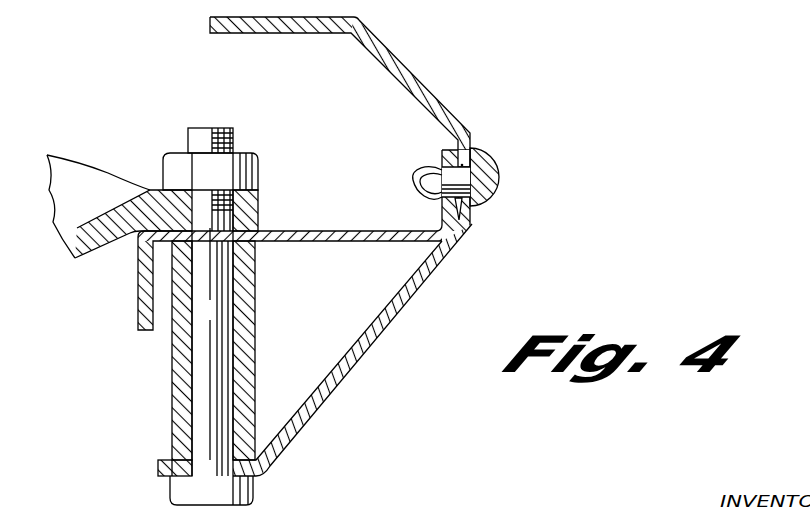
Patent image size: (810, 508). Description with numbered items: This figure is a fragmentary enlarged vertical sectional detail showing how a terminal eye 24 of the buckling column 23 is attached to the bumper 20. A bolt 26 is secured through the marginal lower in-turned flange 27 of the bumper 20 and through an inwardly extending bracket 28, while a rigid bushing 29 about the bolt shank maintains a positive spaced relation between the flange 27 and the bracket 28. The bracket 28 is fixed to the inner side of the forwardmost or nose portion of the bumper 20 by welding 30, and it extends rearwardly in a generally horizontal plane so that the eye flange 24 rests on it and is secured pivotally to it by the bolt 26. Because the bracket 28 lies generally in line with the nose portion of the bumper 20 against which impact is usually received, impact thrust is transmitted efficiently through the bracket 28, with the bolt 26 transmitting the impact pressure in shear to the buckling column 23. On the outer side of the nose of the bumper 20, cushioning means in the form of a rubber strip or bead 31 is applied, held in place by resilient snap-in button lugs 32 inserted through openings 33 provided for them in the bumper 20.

The bumper 20 is at (412, 78).
The buckling column 23 is at (108, 222).
The terminal eye 24 is at (256, 213).
The bolt 26 is at (205, 364).
The marginal lower in-turned flange 27 is at (172, 467).
The bracket 28 is at (300, 236).
The rigid bushing 29 is at (243, 372).
The welding 30 is at (471, 229).
The rubber strip or bead 31 is at (484, 166).
The resilient snap-in button lug 32 is at (447, 173).
The opening 33 is at (464, 140).